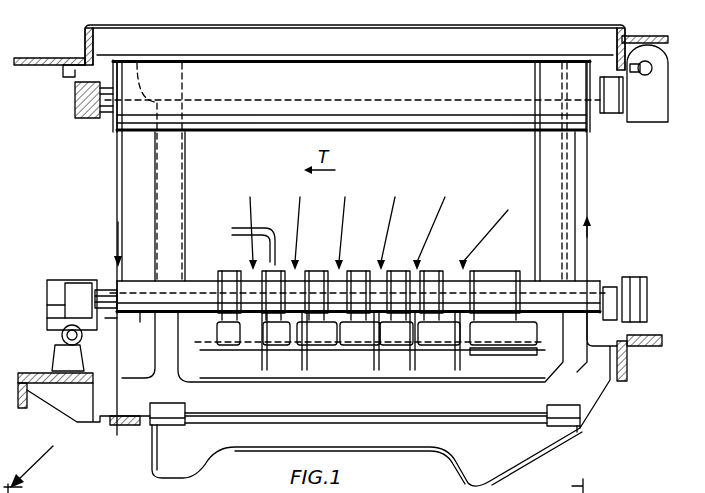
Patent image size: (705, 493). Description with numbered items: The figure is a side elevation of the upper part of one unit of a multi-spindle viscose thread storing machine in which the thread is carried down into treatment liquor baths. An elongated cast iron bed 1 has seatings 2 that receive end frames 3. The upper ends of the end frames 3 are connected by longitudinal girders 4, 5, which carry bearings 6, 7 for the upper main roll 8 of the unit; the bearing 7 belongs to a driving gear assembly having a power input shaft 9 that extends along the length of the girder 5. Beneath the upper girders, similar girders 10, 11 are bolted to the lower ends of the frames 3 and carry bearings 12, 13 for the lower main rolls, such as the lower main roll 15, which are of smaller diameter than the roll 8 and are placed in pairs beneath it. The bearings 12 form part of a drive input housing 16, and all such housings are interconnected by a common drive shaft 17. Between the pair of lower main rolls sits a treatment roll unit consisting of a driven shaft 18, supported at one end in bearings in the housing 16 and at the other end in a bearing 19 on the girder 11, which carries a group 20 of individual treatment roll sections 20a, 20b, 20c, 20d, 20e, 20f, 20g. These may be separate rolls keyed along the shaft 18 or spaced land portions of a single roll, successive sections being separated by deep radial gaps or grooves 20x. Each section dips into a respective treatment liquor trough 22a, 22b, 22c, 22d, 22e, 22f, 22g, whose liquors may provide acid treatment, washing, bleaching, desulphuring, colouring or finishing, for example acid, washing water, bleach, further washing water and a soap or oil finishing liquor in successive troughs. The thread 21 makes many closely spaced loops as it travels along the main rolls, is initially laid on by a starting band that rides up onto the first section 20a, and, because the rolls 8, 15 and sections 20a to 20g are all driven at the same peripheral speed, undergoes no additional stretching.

The cast iron bed 1 is at (258, 449).
The seatings 2 is at (153, 422).
The end frames 3 is at (157, 157).
The longitudinal girder 4 is at (55, 60).
The longitudinal girder 5 is at (662, 41).
The bearing 6 is at (80, 116).
The bearing 7 is at (648, 122).
The upper main roll 8 is at (255, 133).
The power input shaft 9 is at (647, 76).
The lower girder 10 is at (38, 373).
The lower girder 11 is at (656, 338).
The bearings 12 is at (78, 284).
The bearings 13 is at (612, 289).
The lower main roll 15 is at (143, 318).
The drive input housing 16 is at (60, 281).
The common drive shaft 17 is at (61, 335).
The driven shaft 18 is at (108, 318).
The bearing 19 is at (638, 288).
The group of treatment rolls 20 is at (216, 278).
The treatment roll section 20a is at (495, 270).
The treatment roll section 20b is at (445, 268).
The treatment roll section 20c is at (410, 268).
The treatment roll section 20d is at (362, 268).
The treatment roll section 20e is at (312, 268).
The treatment roll section 20f is at (270, 268).
The treatment roll section 20g is at (228, 270).
The radial gaps or grooves 20x is at (386, 224).
The thread 21 is at (117, 204).
The treatment liquor trough 22a is at (498, 345).
The treatment liquor trough 22b is at (437, 342).
The treatment liquor trough 22c is at (393, 342).
The treatment liquor trough 22d is at (335, 340).
The treatment liquor trough 22e is at (292, 340).
The treatment liquor trough 22f is at (250, 350).
The treatment liquor trough 22g is at (200, 335).